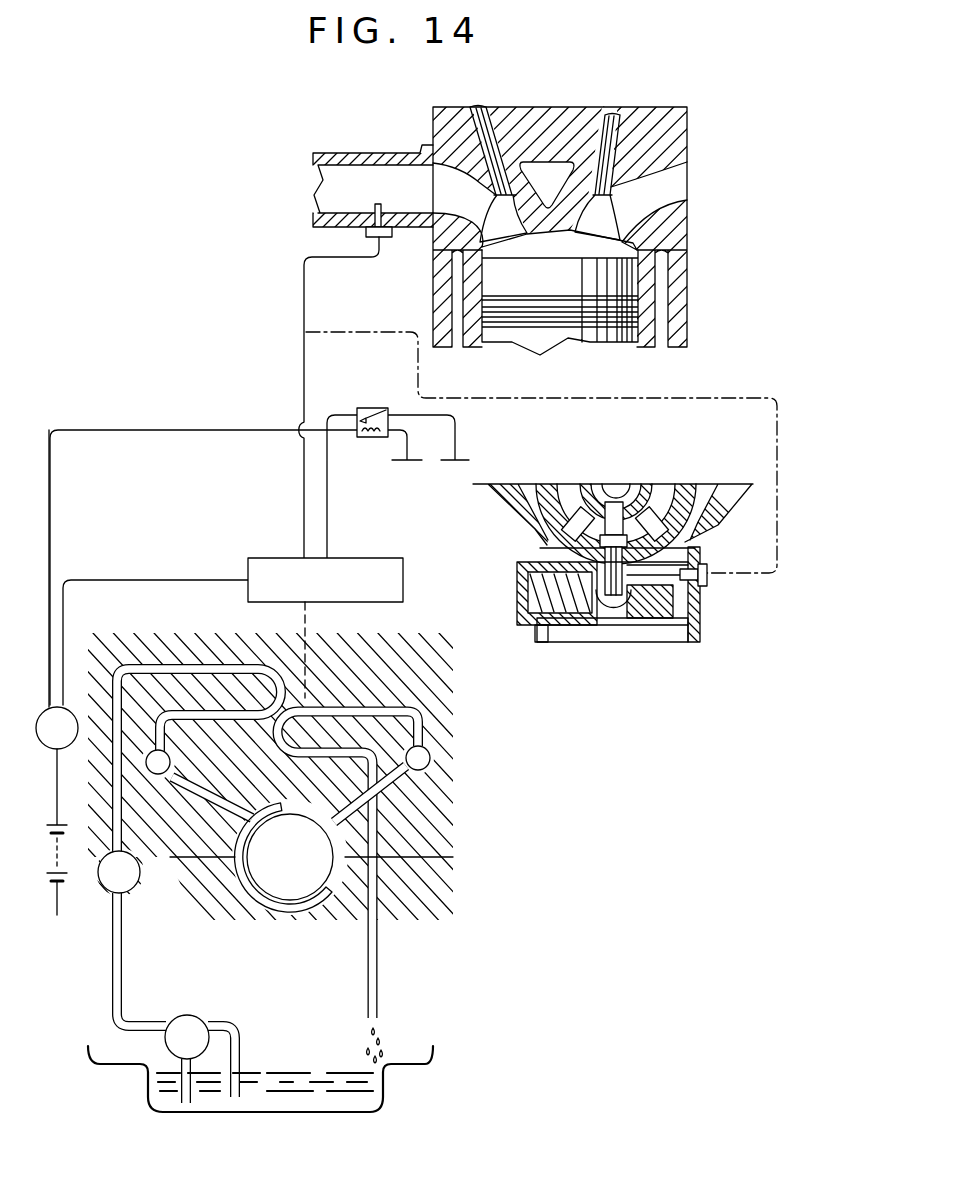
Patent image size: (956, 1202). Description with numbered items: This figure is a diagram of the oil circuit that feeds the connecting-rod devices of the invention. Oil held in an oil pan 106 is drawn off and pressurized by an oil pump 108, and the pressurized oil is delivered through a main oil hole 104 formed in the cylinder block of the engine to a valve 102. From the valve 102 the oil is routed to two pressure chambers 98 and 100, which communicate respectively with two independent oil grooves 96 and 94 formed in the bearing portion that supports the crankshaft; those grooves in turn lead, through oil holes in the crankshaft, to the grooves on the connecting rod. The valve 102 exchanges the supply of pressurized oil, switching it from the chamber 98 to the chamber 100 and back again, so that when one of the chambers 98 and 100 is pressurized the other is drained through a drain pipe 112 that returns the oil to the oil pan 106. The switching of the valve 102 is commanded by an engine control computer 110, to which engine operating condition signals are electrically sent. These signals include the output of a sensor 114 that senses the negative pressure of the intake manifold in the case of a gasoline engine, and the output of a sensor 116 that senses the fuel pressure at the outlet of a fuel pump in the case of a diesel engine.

The oil groove 94 is at (333, 885).
The oil groove 96 is at (258, 908).
The pressure chamber 98 is at (170, 762).
The pressure chamber 100 is at (430, 758).
The valve 102 is at (303, 700).
The main oil hole 104 is at (140, 872).
The oil pan 106 is at (375, 1125).
The oil pump 108 is at (185, 1016).
The engine control computer 110 is at (270, 558).
The drain pipe 112 is at (378, 966).
The sensor 114 is at (388, 238).
The sensor 116 is at (707, 582).